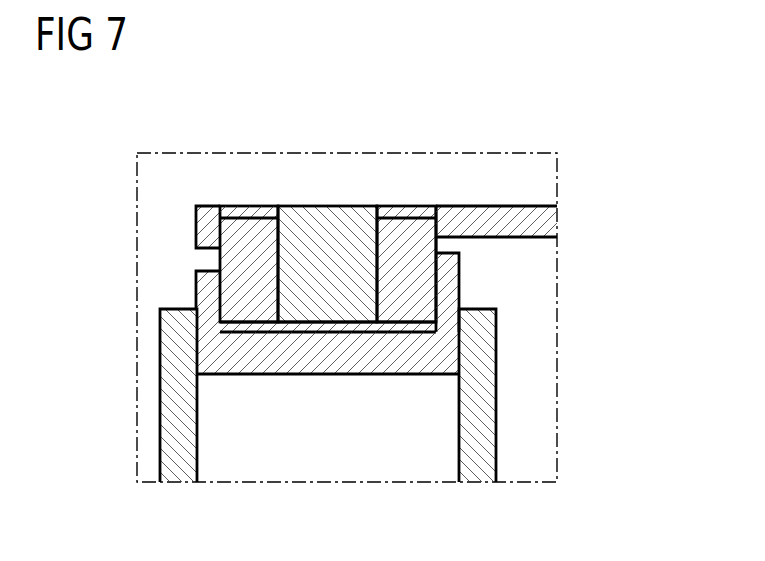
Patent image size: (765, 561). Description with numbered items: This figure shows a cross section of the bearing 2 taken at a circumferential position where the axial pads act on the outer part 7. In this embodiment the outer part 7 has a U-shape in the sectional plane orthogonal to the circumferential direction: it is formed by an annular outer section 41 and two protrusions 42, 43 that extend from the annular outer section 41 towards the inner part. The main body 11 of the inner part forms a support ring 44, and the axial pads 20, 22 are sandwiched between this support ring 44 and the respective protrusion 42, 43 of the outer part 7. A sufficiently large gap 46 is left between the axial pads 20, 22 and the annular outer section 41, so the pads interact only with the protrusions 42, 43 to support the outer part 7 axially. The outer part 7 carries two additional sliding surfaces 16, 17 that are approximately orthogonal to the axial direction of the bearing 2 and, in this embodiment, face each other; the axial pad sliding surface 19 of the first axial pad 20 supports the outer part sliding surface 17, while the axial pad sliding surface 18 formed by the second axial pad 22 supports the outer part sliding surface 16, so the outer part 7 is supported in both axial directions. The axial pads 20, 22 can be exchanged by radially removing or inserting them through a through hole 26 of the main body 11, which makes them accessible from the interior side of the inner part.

The bearing 2 is at (118, 223).
The outer part 7 is at (406, 442).
The main body 11 is at (495, 213).
The outer part sliding surface 16 is at (222, 283).
The outer part sliding surface 17 is at (433, 283).
The axial pad sliding surface 18 is at (220, 258).
The axial pad sliding surface 19 is at (442, 243).
The axial pad 20 is at (392, 225).
The axial pad 22 is at (258, 238).
The through hole 26 is at (408, 184).
The annular outer section 41 is at (355, 362).
The protrusion 42 is at (207, 333).
The protrusion 43 is at (447, 338).
The support ring 44 is at (333, 225).
The gap 46 is at (318, 325).